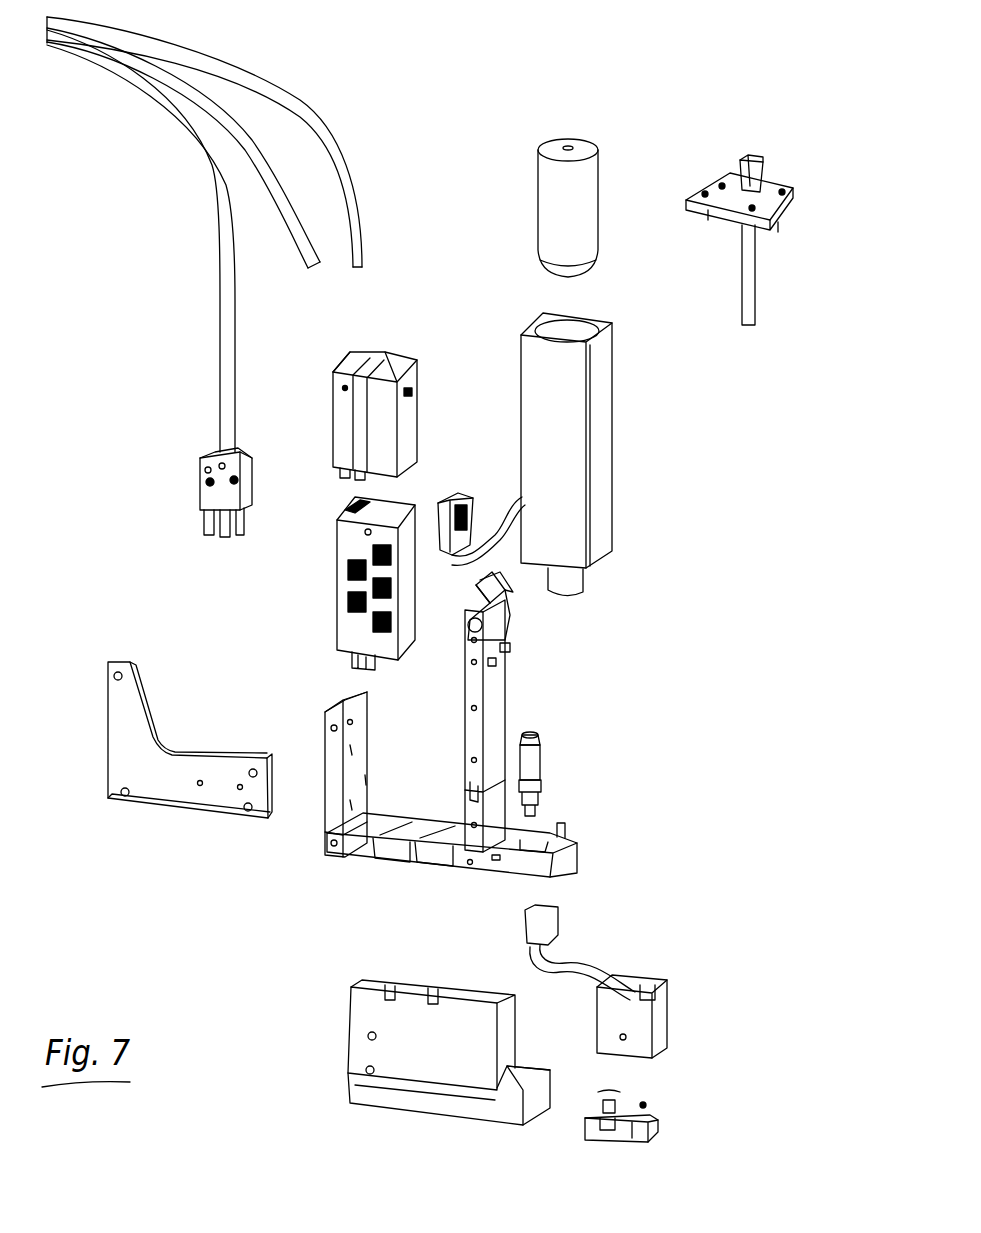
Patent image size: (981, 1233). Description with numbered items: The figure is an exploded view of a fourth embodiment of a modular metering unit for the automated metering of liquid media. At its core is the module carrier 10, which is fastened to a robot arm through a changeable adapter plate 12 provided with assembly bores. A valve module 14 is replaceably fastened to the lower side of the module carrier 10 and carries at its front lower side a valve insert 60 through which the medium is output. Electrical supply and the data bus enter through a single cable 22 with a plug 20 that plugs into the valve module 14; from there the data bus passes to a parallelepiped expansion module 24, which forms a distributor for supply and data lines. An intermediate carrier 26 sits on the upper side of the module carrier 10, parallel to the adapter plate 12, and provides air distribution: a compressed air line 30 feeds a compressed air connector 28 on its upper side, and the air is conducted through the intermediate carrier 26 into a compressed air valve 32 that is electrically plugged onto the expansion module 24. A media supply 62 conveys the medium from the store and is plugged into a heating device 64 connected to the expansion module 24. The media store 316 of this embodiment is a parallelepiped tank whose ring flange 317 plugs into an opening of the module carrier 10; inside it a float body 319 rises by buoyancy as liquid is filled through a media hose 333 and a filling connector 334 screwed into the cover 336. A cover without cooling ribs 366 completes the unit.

The module carrier 10 is at (453, 856).
The adapter plate 12 is at (332, 753).
The valve module 14 is at (440, 1062).
The plug 20 is at (220, 492).
The cable 22 is at (222, 283).
The expansion module 24 is at (352, 538).
The intermediate carrier 26 is at (490, 697).
The compressed air connector 28 is at (477, 578).
The compressed air line 30 is at (275, 203).
The compressed air valve 32 is at (382, 435).
The valve insert 60 is at (623, 1132).
The media supply 62 is at (528, 772).
The heating device 64 is at (633, 1023).
The media store 316 is at (573, 447).
The ring flange 317 is at (570, 577).
The float body 319 is at (580, 233).
The media hose 333 is at (323, 125).
The filling connector 334 is at (748, 182).
The cover 336 is at (705, 183).
The cover without cooling ribs 366 is at (162, 780).